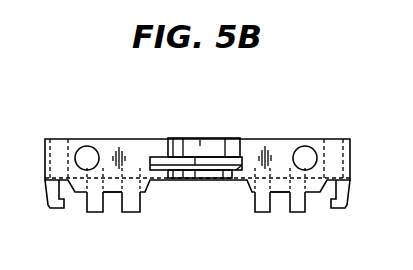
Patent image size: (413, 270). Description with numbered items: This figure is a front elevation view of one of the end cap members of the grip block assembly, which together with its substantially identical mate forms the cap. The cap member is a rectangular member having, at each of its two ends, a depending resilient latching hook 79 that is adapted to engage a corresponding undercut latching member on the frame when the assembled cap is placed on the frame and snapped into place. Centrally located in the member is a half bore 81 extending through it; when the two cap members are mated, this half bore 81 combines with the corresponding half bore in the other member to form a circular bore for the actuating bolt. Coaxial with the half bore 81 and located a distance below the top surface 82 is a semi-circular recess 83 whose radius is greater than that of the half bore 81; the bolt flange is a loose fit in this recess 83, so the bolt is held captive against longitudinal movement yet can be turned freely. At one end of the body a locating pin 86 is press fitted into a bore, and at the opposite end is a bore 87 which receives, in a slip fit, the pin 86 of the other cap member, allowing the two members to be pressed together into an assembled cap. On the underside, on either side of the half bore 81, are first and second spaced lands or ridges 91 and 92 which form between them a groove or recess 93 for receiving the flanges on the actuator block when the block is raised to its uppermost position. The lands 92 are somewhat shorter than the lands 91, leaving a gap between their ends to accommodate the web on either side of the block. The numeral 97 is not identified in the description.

The depending resilient latching hook 79 is at (47, 206).
The half bore 81 is at (173, 138).
The top surface 82 is at (265, 138).
The semi-circular recess 83 is at (232, 172).
The locating pin 86 is at (92, 146).
The bore 87 is at (310, 146).
The first land 91 is at (91, 201).
The second land 92 is at (136, 205).
The groove 93 is at (113, 201).
The leg 97 is at (262, 206).